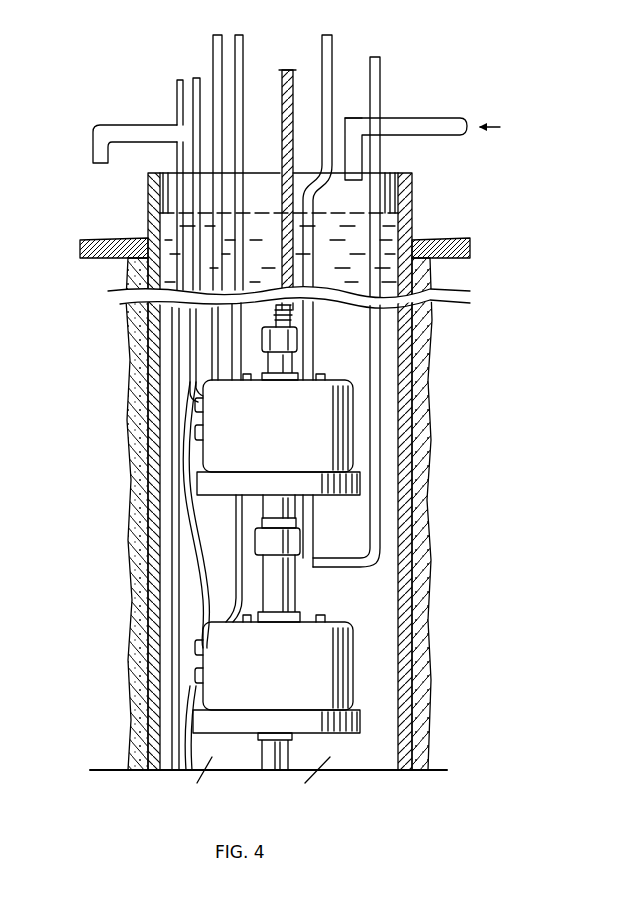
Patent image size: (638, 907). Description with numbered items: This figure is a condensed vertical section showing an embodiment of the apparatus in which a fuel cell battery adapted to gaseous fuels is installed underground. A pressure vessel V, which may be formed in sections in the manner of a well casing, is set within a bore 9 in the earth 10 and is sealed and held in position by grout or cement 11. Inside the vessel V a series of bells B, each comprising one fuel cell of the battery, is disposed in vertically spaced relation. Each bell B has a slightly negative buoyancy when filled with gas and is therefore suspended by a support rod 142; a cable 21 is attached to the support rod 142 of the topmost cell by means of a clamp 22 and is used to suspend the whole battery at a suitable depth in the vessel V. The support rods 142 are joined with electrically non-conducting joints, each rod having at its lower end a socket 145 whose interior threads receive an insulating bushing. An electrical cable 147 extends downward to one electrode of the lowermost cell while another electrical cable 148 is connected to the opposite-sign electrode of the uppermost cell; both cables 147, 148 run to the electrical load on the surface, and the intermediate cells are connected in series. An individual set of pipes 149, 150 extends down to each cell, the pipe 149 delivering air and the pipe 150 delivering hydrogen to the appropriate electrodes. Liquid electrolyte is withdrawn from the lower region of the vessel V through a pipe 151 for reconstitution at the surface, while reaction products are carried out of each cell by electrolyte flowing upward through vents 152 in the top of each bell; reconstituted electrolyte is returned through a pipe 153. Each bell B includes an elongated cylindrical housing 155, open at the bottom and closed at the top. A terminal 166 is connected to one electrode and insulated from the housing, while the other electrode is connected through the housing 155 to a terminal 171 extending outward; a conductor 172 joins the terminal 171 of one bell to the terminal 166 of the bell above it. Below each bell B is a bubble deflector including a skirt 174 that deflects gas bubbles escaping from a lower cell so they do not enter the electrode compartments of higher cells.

The bore 9 is at (425, 345).
The earth 10 is at (444, 240).
The grout or cement 11 is at (422, 242).
The cable 21 is at (296, 72).
The clamp 22 is at (300, 335).
The support rod 142 is at (300, 362).
The socket 145 is at (300, 545).
The electrical cable 147 is at (178, 96).
The electrical cable 148 is at (196, 78).
The pipe 149 is at (332, 78).
The pipe 150 is at (240, 38).
The pipe 151 is at (148, 125).
The vents 152 is at (320, 384).
The pipe 153 is at (420, 120).
The housing 155 is at (307, 449).
The electrical terminal 166 is at (203, 433).
The terminal 171 is at (203, 406).
The conductor 172 is at (200, 531).
The skirt 174 is at (300, 494).
The pressure vessel V is at (415, 183).
The bell B is at (338, 376).